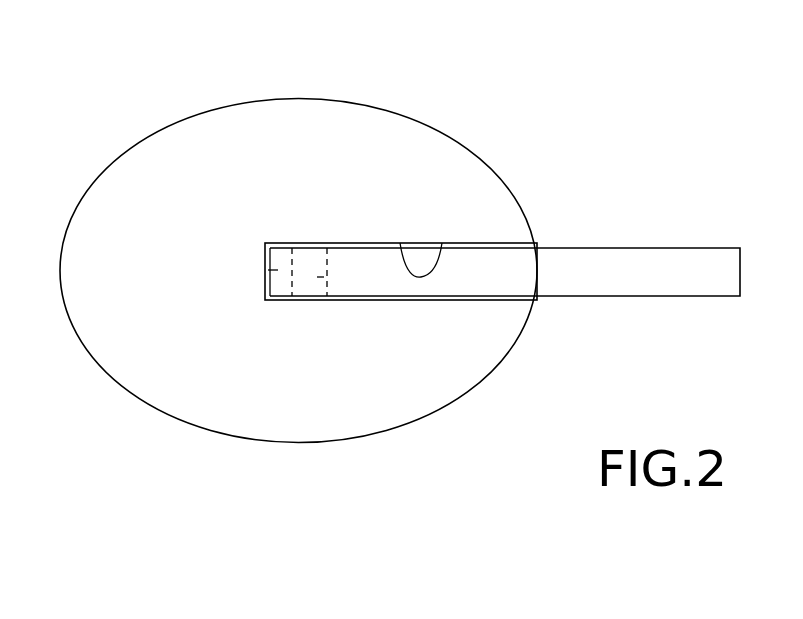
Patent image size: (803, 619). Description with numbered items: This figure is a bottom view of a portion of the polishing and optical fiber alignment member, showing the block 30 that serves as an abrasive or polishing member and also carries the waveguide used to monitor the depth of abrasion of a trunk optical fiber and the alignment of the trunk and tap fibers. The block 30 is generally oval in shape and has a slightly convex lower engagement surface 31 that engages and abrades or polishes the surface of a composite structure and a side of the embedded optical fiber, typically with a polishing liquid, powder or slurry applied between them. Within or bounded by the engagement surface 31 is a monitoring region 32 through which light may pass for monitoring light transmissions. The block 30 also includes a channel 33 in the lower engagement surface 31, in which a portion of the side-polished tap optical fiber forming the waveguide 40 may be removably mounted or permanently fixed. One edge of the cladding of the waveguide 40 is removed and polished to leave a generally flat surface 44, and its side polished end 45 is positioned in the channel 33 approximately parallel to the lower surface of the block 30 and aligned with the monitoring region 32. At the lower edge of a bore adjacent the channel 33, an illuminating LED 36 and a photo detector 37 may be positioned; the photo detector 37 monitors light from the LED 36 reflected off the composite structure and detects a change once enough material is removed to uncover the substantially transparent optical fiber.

The block 30 is at (397, 112).
The lower engagement surface 31 is at (160, 164).
The monitoring region 32 is at (305, 318).
The channel 33 is at (442, 243).
The illuminating LED 36 is at (267, 271).
The photo detector 37 is at (330, 277).
The waveguide 40 is at (659, 265).
The flat surface 44 is at (278, 285).
The side polished end 45 is at (282, 258).